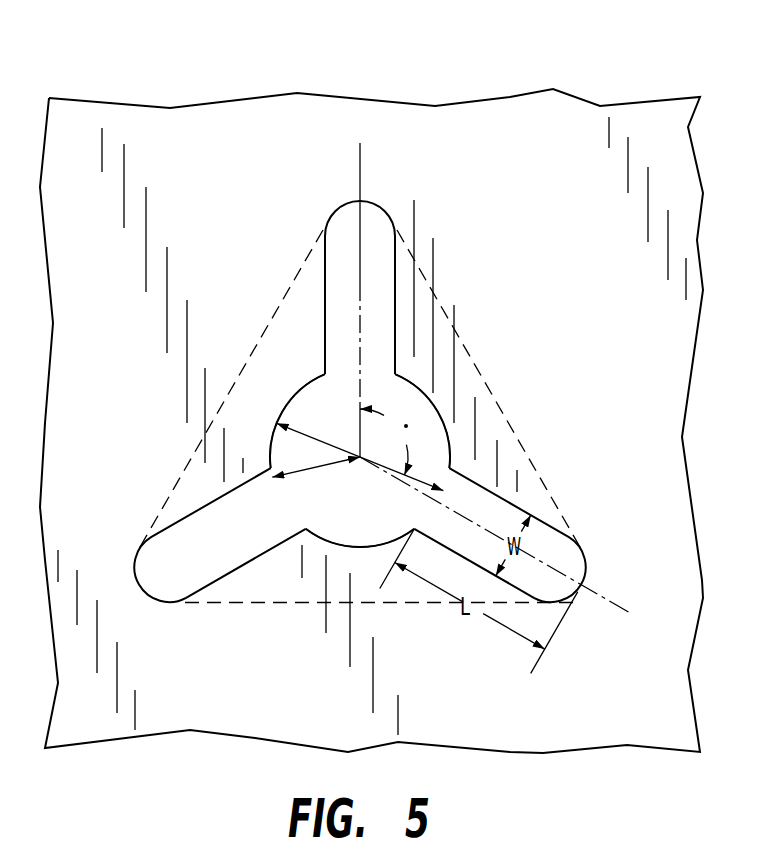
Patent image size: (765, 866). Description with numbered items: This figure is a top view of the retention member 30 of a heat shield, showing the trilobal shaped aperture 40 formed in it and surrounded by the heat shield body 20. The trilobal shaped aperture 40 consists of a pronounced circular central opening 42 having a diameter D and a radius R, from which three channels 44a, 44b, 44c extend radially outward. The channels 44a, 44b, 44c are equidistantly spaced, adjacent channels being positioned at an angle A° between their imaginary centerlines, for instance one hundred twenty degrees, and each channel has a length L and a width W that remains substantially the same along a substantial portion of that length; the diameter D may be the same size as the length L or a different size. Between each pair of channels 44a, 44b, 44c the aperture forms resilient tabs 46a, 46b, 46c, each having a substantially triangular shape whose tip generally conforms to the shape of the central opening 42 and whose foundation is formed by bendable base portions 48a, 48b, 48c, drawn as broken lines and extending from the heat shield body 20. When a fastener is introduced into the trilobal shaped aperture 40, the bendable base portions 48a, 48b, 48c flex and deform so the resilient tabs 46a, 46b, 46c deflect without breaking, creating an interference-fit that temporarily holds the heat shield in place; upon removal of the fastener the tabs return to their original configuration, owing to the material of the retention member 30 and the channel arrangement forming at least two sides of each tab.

The heat shield body 20 is at (619, 713).
The retention member 30 is at (511, 62).
The trilobal shaped aperture 40 is at (369, 377).
The central opening 42 is at (372, 503).
The first channel 44a is at (172, 570).
The second channel 44b is at (352, 233).
The third channel 44c is at (562, 561).
The first resilient tab 46a is at (367, 574).
The second resilient tab 46b is at (257, 388).
The third resilient tab 46c is at (463, 389).
The first bendable base portion 48a is at (184, 472).
The second bendable base portion 48b is at (287, 604).
The third bendable base portion 48c is at (517, 442).